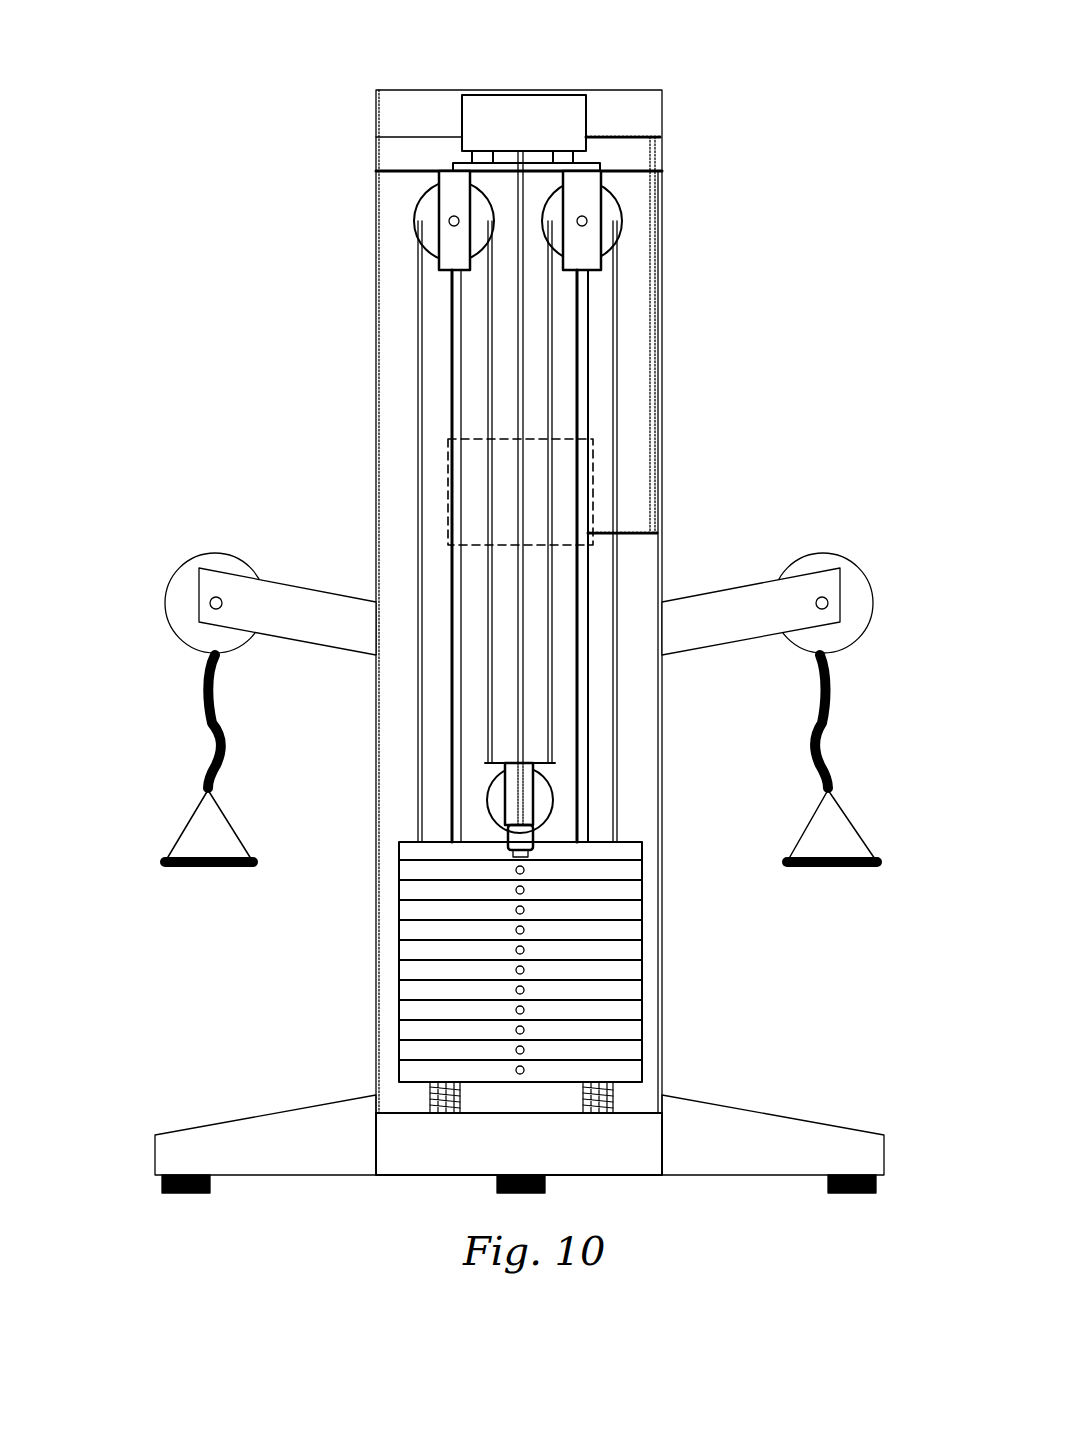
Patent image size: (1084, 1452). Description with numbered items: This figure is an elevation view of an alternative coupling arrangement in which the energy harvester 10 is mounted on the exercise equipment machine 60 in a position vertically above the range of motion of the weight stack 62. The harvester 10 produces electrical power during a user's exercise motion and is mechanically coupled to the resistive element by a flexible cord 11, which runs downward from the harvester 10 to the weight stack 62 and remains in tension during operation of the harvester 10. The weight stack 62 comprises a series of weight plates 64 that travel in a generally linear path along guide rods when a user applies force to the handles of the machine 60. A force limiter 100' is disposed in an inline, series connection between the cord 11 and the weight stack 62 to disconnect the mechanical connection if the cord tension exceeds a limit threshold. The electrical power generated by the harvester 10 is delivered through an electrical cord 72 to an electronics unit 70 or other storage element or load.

The energy harvester 10 is at (546, 105).
The flexible cord 11 is at (523, 338).
The exercise equipment machine 60 is at (300, 585).
The weight stack 62 is at (514, 962).
The weight plates 64 is at (618, 869).
The electronics unit 70 is at (563, 494).
The electrical cord 72 is at (653, 250).
The force limiter 100' is at (416, 818).